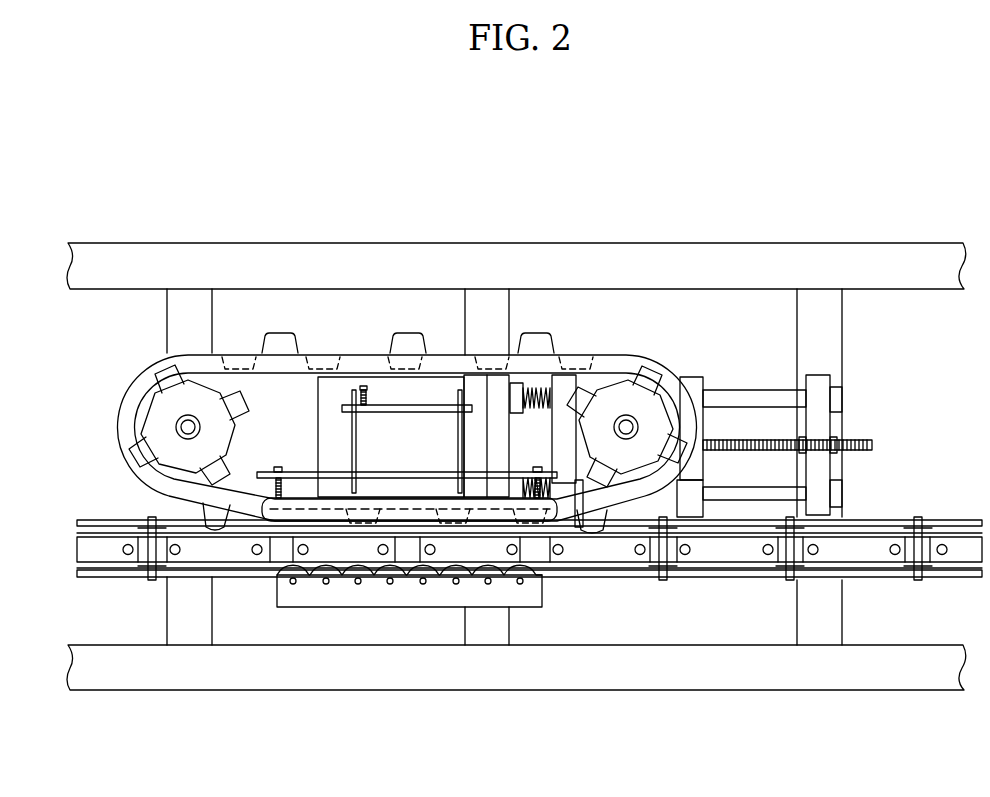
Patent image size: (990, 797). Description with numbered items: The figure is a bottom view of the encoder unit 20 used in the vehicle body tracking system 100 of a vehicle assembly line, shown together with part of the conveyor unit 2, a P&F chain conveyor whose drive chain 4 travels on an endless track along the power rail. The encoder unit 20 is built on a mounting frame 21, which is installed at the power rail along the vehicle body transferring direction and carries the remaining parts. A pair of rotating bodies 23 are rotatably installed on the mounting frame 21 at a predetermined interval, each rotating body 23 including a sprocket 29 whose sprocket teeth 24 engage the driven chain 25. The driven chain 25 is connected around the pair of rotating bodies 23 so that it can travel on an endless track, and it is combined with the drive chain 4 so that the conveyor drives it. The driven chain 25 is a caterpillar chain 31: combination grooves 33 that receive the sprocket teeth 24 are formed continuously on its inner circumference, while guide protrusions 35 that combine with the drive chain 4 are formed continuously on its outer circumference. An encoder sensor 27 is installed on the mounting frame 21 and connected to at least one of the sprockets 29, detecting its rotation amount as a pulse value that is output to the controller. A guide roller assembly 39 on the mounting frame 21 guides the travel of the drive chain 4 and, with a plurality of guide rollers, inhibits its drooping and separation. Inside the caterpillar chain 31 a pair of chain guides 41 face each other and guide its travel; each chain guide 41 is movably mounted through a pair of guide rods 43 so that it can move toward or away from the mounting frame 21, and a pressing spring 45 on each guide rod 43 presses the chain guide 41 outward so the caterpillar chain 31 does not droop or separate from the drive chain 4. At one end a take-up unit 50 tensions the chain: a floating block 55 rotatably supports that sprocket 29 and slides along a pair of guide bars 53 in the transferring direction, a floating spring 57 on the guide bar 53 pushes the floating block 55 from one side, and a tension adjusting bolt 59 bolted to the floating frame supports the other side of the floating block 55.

The vehicle body tracking system 100 is at (485, 115).
The conveyor unit 2 is at (116, 592).
The drive chain 4 is at (208, 564).
The encoder unit 20 is at (516, 428).
The mounting frame 21 is at (221, 262).
The rotating body 23 is at (368, 463).
The sprocket teeth 24 is at (238, 383).
The driven chain 25 is at (489, 338).
The encoder sensor 27 is at (188, 418).
The sprocket 29 is at (158, 404).
The caterpillar chain 31 is at (503, 358).
The combination grooves 33 is at (118, 432).
The guide protrusions 35 is at (408, 332).
The guide roller assembly 39 is at (382, 600).
The chain guide 41 is at (447, 375).
The guide rod 43 is at (384, 404).
The pressing spring 45 is at (362, 385).
The take-up unit 50 is at (815, 417).
The guide bar 53 is at (787, 400).
The floating block 55 is at (698, 379).
The floating spring 57 is at (538, 386).
The tension adjusting bolt 59 is at (873, 447).